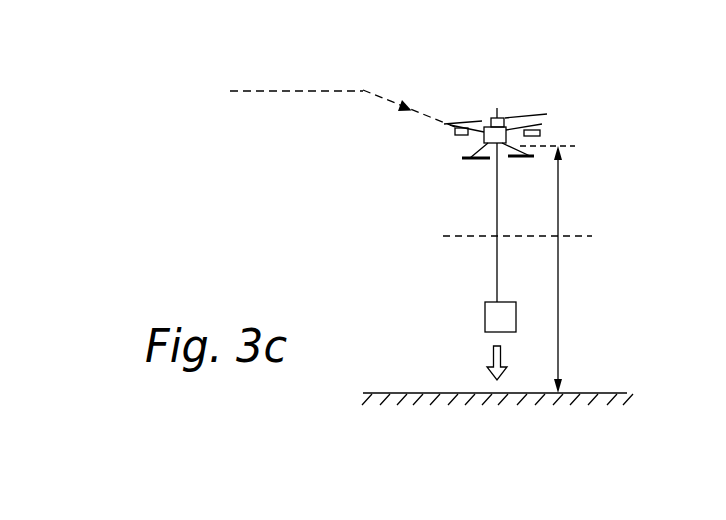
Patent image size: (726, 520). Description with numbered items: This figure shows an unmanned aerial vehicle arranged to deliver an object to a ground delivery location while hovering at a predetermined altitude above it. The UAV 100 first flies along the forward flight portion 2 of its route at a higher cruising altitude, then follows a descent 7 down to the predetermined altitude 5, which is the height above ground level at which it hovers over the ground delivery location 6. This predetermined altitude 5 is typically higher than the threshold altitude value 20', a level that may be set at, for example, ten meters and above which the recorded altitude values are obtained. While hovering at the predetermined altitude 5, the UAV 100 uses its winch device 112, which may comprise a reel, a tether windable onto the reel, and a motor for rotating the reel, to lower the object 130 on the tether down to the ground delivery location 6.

The forward flight portion 2 is at (272, 91).
The descent 7 is at (374, 93).
The UAV 100 is at (498, 115).
The winch device 112 is at (482, 155).
The threshold altitude value 20' is at (486, 259).
The predetermined altitude 5 is at (558, 313).
The object 130 is at (485, 320).
The ground delivery location 6 is at (497, 394).